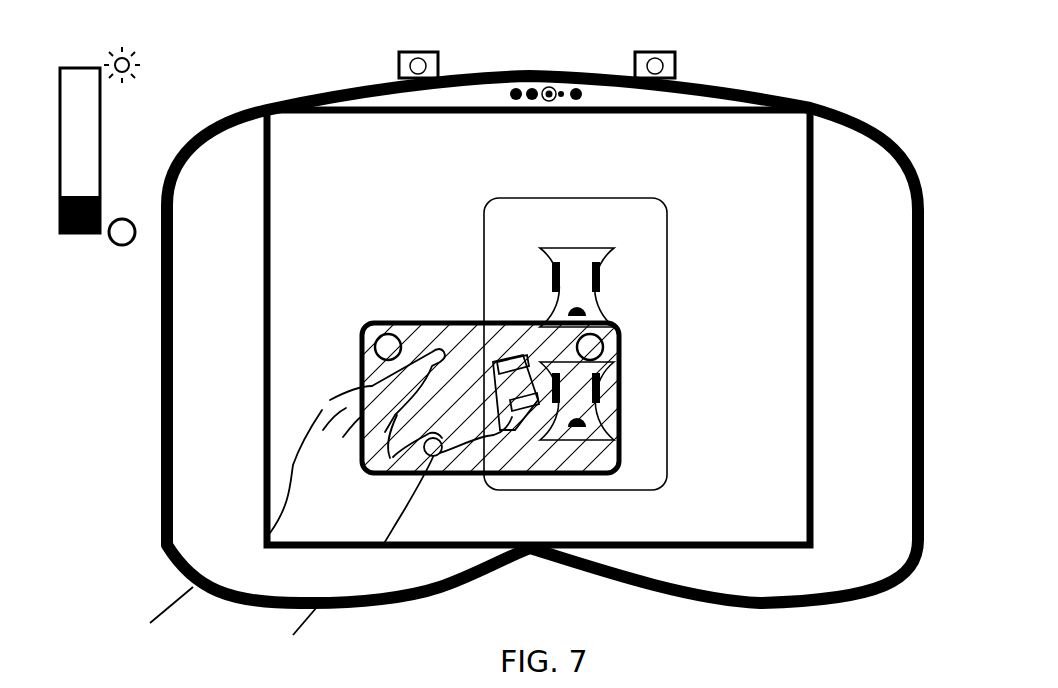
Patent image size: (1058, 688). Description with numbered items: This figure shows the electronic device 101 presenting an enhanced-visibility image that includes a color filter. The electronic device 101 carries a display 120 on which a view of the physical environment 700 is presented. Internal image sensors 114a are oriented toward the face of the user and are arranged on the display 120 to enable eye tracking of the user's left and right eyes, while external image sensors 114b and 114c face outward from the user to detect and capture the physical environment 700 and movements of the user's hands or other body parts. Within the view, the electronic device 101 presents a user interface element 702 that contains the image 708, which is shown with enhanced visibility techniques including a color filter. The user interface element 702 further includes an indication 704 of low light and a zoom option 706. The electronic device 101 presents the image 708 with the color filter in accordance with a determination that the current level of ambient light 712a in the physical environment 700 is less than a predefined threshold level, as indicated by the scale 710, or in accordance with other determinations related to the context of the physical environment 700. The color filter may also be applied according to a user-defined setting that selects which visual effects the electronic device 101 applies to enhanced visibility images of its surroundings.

The electronic device 101 is at (770, 95).
The display 120 is at (805, 557).
The internal image sensors 114a is at (603, 88).
The external image sensor 114b is at (438, 60).
The external image sensor 114c is at (675, 60).
The physical environment 700 is at (571, 156).
The user interface element 702 is at (362, 375).
The indication of low light 704 is at (390, 333).
The zoom option 706 is at (604, 348).
The image 708 is at (355, 394).
The scale 710 is at (88, 235).
The current level of ambient light 712a is at (82, 196).